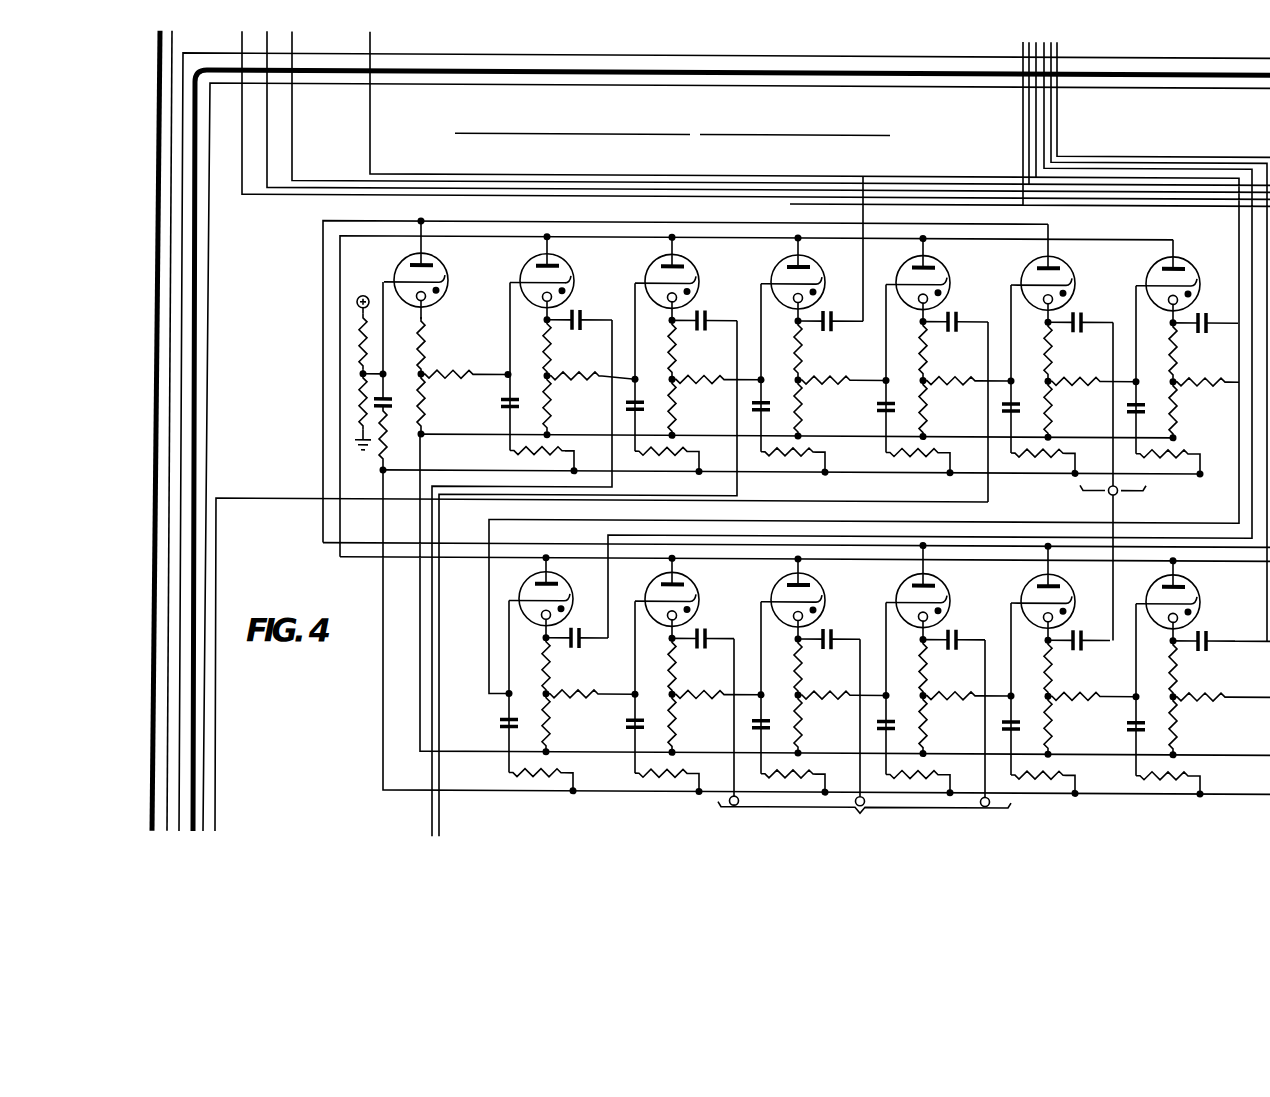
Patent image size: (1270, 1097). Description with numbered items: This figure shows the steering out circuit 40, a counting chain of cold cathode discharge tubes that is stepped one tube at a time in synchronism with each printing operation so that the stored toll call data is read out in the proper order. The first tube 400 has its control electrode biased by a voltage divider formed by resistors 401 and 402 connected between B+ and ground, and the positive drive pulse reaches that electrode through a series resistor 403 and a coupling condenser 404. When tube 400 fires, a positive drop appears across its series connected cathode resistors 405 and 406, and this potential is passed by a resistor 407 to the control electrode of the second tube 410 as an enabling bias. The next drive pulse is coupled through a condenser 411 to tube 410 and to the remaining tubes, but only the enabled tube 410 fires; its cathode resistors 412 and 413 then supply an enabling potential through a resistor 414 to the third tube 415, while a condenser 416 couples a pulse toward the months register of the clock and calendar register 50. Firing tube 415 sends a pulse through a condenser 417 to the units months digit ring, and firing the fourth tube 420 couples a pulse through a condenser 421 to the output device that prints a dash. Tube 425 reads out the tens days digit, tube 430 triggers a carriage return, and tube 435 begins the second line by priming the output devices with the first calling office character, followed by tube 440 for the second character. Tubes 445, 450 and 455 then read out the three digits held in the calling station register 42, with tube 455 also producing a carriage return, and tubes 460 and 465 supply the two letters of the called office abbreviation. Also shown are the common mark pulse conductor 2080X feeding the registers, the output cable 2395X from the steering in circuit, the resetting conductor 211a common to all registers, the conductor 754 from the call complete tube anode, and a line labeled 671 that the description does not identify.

The first tube 400 is at (441, 263).
The resistor 401 is at (356, 332).
The resistor 402 is at (358, 420).
The series resistor 403 is at (380, 455).
The coupling condenser 404 is at (376, 388).
The cathode resistor 405 is at (426, 345).
The cathode resistor 406 is at (426, 408).
The resistor 407 is at (444, 372).
The second tube 410 is at (567, 262).
The condenser 411 is at (501, 412).
The cathode resistor 412 is at (556, 348).
The cathode resistor 413 is at (555, 413).
The resistor 414 is at (558, 382).
The condenser 416 is at (576, 315).
The third tube 415 is at (692, 262).
The condenser 417 is at (703, 313).
The fourth tube 420 is at (817, 262).
The condenser 421 is at (818, 333).
The tube 425 is at (942, 264).
The tube 430 is at (1068, 272).
The tube 435 is at (1192, 272).
The tube 440 is at (563, 586).
The tube 445 is at (693, 583).
The tube 450 is at (819, 583).
The tube 455 is at (944, 582).
The tube 460 is at (1068, 590).
The tube 465 is at (1192, 590).
The steering out circuit 40 is at (672, 117).
The clock and calendar register 50 is at (1119, 498).
The calling station register 42 is at (864, 816).
The conductor 671 is at (167, 53).
The conductor 754 is at (609, 54).
The resetting conductor 211a is at (172, 330).
The mark pulse conductor 2080X is at (211, 472).
The output cable 2395X is at (196, 752).